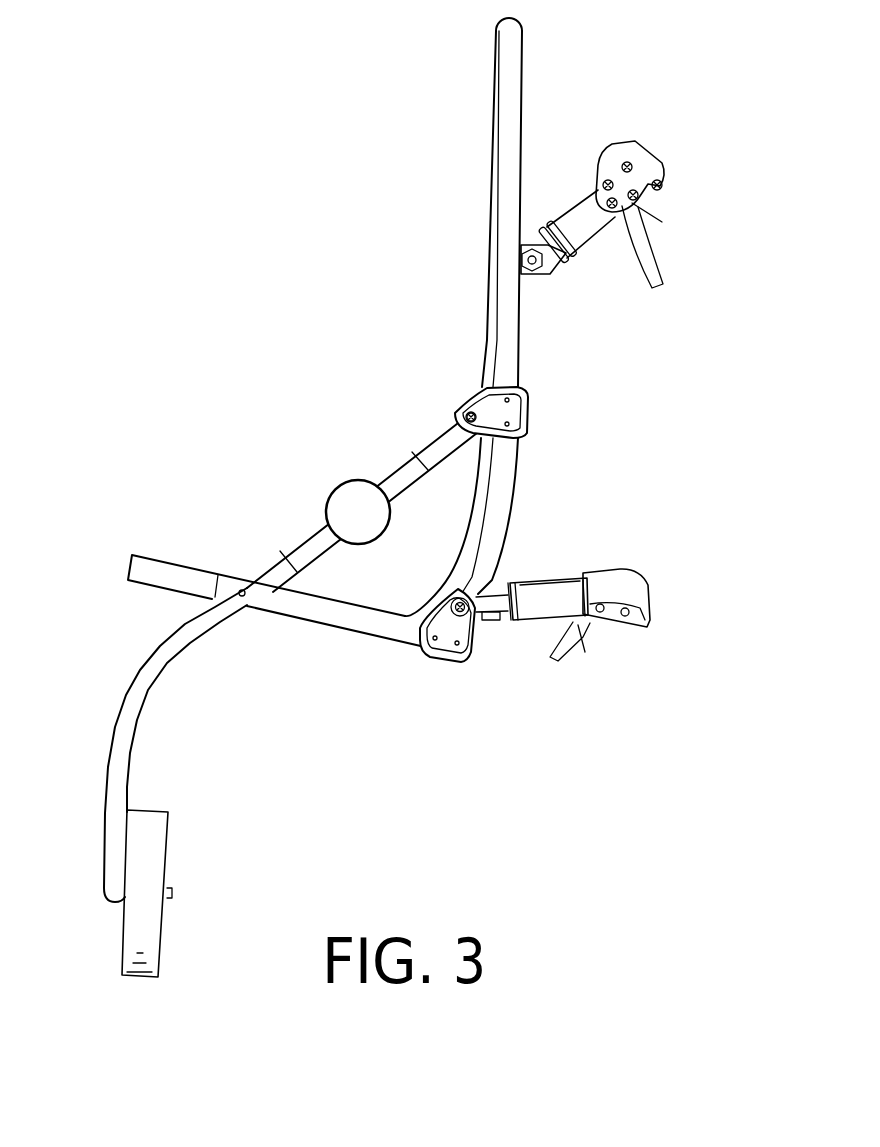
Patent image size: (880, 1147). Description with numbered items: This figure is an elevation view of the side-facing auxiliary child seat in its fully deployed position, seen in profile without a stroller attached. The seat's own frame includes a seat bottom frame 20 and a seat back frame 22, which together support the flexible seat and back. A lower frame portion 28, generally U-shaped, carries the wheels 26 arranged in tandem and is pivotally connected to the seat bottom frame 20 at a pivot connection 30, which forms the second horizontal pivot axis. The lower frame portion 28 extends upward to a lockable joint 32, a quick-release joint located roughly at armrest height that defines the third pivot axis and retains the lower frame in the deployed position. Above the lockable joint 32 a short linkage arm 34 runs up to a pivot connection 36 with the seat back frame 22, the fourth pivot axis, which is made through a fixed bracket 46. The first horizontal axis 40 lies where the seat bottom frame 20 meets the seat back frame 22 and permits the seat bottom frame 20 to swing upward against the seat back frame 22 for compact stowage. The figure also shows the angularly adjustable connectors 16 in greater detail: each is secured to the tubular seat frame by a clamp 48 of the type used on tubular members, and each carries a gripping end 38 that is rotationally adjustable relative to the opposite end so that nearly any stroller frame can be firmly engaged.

The connectors 16 is at (553, 590).
The seat bottom frame 20 is at (305, 612).
The seat back frame 22 is at (498, 141).
The wheels 26 is at (157, 970).
The lower frame portion 28 is at (126, 693).
The pivot connection 30 is at (244, 598).
The lockable joints 32 is at (333, 492).
The short linkage arm 34 is at (423, 445).
The pivot connection 36 is at (467, 416).
The gripping ends 38 is at (633, 577).
The first horizontal axis 40 is at (471, 617).
The fixed bracket 46 is at (500, 427).
The clamps 48 is at (527, 277).